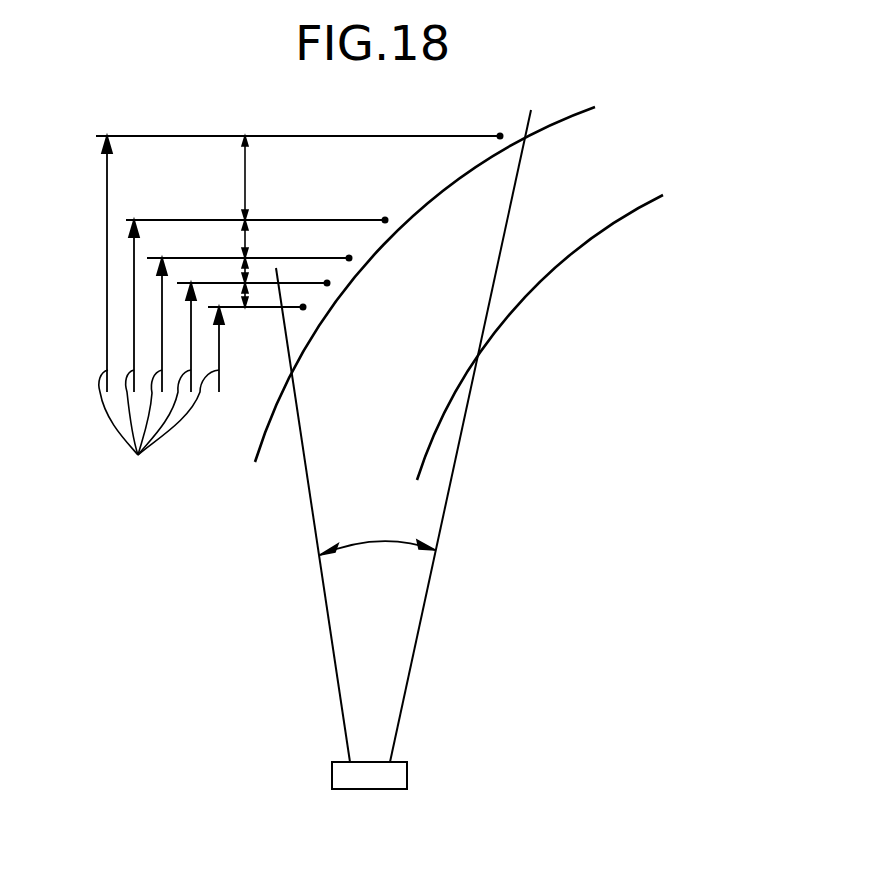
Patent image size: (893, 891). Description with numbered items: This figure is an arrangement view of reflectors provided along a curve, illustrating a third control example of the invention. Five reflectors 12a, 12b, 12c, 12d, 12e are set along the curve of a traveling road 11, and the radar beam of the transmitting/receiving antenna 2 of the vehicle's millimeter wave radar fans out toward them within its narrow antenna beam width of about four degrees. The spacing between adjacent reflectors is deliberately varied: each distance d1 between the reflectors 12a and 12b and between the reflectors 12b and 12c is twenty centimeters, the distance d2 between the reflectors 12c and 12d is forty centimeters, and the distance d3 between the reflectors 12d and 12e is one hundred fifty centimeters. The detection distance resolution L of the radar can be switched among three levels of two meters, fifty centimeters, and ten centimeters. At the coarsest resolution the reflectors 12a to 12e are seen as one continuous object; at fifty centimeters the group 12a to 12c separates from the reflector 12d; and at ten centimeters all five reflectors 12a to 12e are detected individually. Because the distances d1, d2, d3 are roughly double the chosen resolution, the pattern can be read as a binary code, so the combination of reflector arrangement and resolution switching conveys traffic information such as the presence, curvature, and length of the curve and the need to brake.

The transmitting/receiving antenna 2 is at (407, 772).
The traveling road 11 is at (593, 242).
The reflector 12a is at (303, 307).
The reflector 12b is at (327, 283).
The reflector 12c is at (349, 258).
The reflector 12d is at (385, 220).
The reflector 12e is at (527, 138).
The detection distance resolution L is at (161, 311).
The distance between reflectors d1 is at (249, 268).
The distance between reflectors d2 is at (245, 238).
The distance between reflectors d3 is at (245, 177).